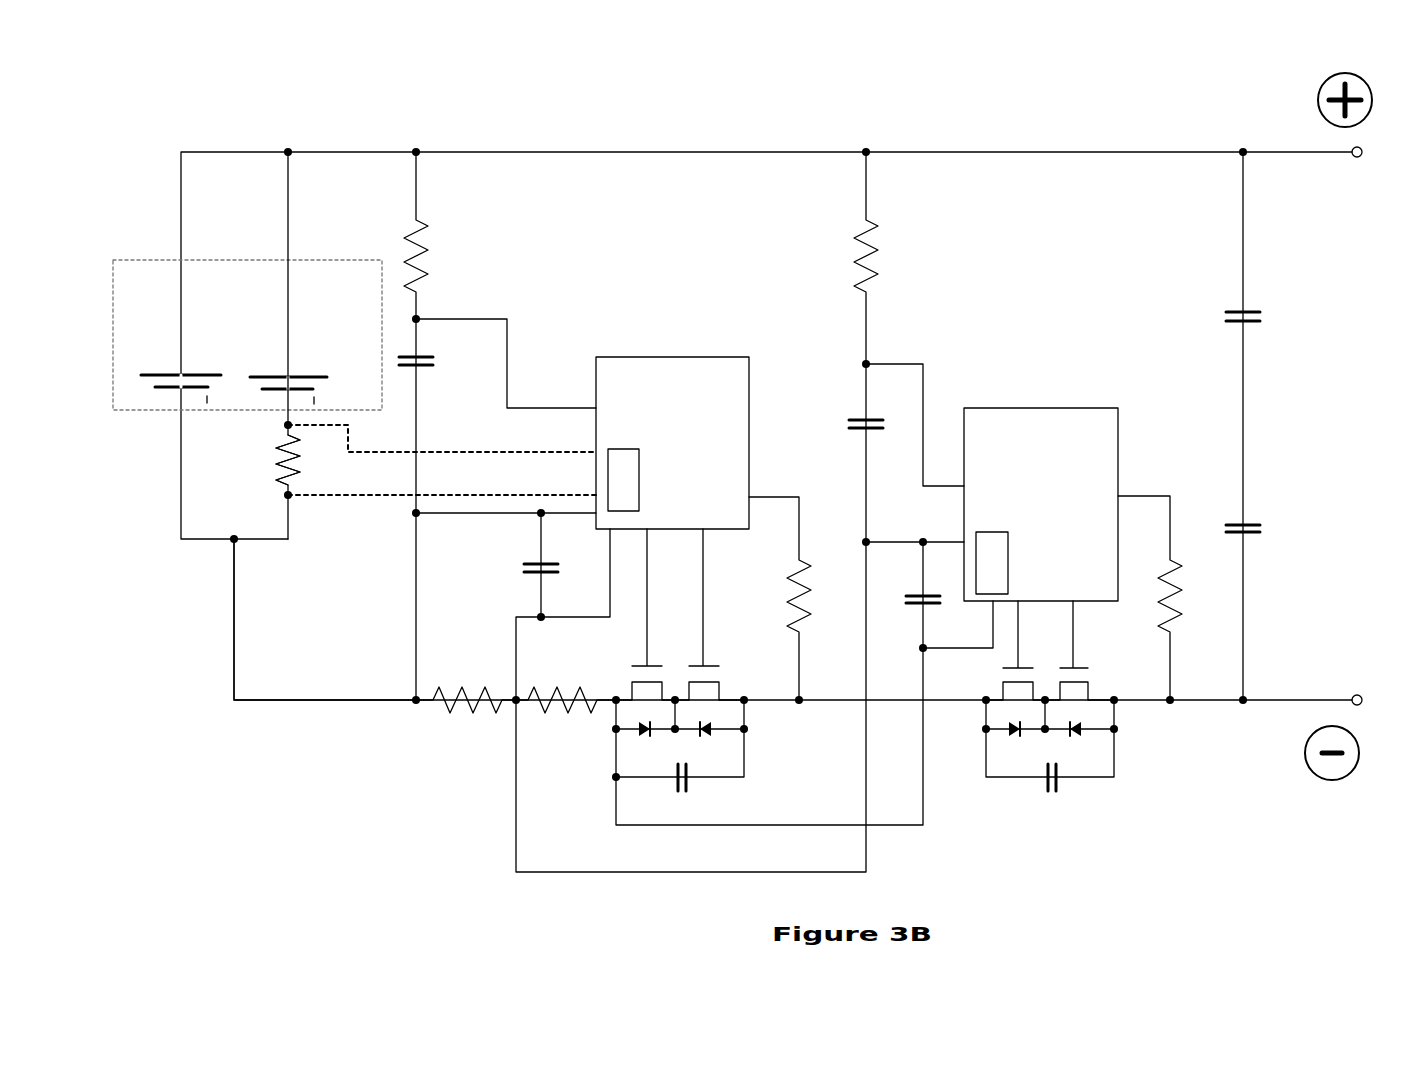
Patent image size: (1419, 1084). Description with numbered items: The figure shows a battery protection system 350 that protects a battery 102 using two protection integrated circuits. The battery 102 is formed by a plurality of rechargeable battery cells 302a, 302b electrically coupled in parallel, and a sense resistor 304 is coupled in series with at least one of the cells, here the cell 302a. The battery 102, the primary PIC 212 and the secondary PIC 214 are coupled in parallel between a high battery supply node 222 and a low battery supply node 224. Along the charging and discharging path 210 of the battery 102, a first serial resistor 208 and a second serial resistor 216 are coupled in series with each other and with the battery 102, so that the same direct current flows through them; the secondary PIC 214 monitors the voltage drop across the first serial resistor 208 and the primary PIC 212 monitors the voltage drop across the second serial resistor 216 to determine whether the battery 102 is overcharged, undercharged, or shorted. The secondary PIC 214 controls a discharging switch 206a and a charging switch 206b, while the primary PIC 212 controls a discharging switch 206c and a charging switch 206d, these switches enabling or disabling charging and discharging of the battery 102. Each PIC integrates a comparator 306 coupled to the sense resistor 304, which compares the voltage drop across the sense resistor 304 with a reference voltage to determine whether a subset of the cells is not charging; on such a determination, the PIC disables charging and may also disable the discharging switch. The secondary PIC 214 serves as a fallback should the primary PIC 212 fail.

The battery 102 is at (156, 289).
The rechargeable battery cell 302a is at (278, 373).
The rechargeable battery cell 302b is at (171, 372).
The sense resistor 304 is at (272, 468).
The charging and discharging path 210 is at (310, 702).
The first serial resistor 208 is at (461, 717).
The second serial resistor 216 is at (554, 684).
The discharging switch 206a is at (631, 664).
The charging switch 206b is at (722, 664).
The discharging switch 206c is at (1002, 690).
The charging switch 206d is at (1089, 690).
The secondary PIC 214 is at (657, 414).
The primary PIC 212 is at (1026, 503).
The comparator 306 is at (632, 463).
The high battery supply node 222 is at (1362, 157).
The low battery supply node 224 is at (1364, 705).
The battery protection system 350 is at (1048, 100).